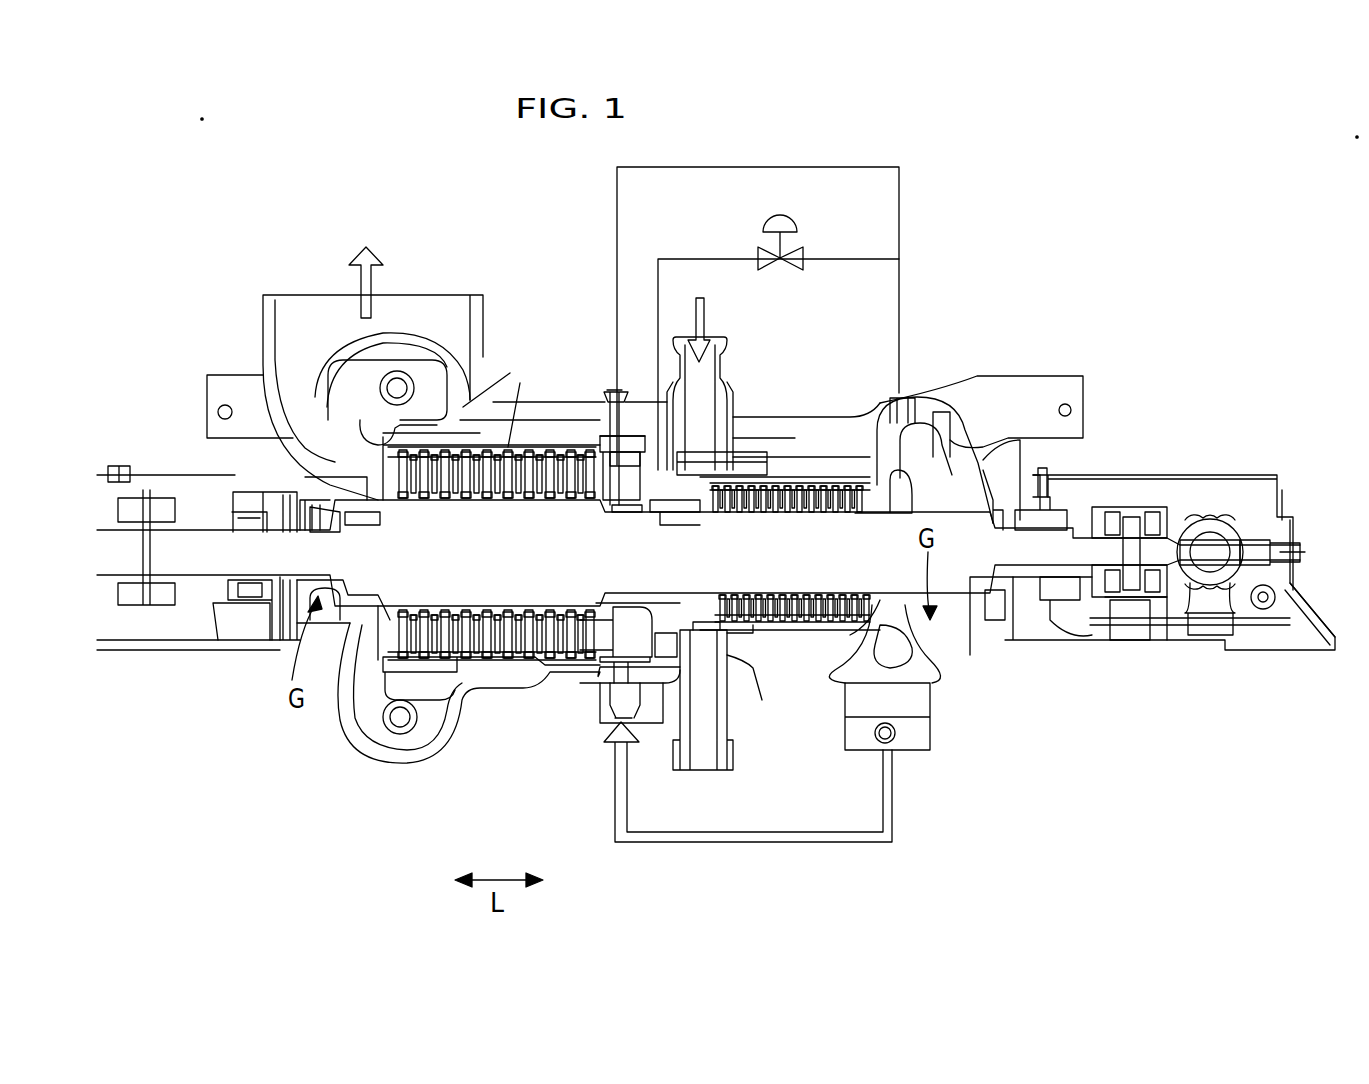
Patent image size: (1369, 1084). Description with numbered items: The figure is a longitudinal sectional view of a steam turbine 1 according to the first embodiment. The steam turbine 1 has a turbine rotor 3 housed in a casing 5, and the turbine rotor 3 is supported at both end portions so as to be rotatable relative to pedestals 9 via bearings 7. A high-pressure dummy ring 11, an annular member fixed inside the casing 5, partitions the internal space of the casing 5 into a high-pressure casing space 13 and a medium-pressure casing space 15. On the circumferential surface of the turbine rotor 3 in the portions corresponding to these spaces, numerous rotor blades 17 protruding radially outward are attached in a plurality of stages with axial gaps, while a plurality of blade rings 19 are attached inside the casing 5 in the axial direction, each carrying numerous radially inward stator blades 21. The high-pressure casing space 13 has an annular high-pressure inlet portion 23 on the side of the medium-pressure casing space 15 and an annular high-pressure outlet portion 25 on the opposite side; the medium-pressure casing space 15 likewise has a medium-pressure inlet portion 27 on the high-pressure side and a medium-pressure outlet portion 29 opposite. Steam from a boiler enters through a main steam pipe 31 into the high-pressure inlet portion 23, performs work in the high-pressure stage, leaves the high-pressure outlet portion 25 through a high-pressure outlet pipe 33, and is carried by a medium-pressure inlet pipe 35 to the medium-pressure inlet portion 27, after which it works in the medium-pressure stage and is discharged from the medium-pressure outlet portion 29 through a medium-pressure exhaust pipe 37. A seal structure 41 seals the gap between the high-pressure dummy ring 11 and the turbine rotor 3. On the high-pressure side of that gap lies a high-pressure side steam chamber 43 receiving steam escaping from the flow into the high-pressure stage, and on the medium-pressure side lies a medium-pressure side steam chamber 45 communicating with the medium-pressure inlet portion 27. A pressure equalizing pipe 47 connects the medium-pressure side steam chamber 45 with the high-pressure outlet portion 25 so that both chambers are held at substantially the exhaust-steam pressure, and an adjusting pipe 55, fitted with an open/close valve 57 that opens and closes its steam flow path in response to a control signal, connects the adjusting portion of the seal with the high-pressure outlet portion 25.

The steam turbine 1 is at (1043, 207).
The turbine rotor 3 is at (285, 557).
The casing 5 is at (549, 390).
The bearings 7 is at (247, 613).
The pedestals 9 is at (153, 653).
The high-pressure dummy ring 11 is at (663, 620).
The high-pressure casing space 13 is at (870, 470).
The medium-pressure casing space 15 is at (375, 458).
The rotor blades 17 is at (437, 612).
The blade rings 19 is at (792, 480).
The stator blades 21 is at (488, 625).
The high-pressure inlet portion 23 is at (705, 610).
The high-pressure outlet portion 25 is at (907, 660).
The medium-pressure inlet portion 27 is at (632, 632).
The medium-pressure outlet portion 29 is at (345, 397).
The main steam pipe 31 is at (727, 347).
The high-pressure outlet pipe 33 is at (933, 740).
The medium-pressure inlet pipe 35 is at (608, 707).
The medium-pressure exhaust pipe 37 is at (262, 340).
The seal structure 41 is at (635, 512).
The high-pressure side steam chamber 43 is at (697, 512).
The medium-pressure side steam chamber 45 is at (610, 498).
The pressure equalizing pipe 47 is at (838, 166).
The adjusting pipe 55 is at (703, 258).
The open/close valve 57 is at (797, 228).